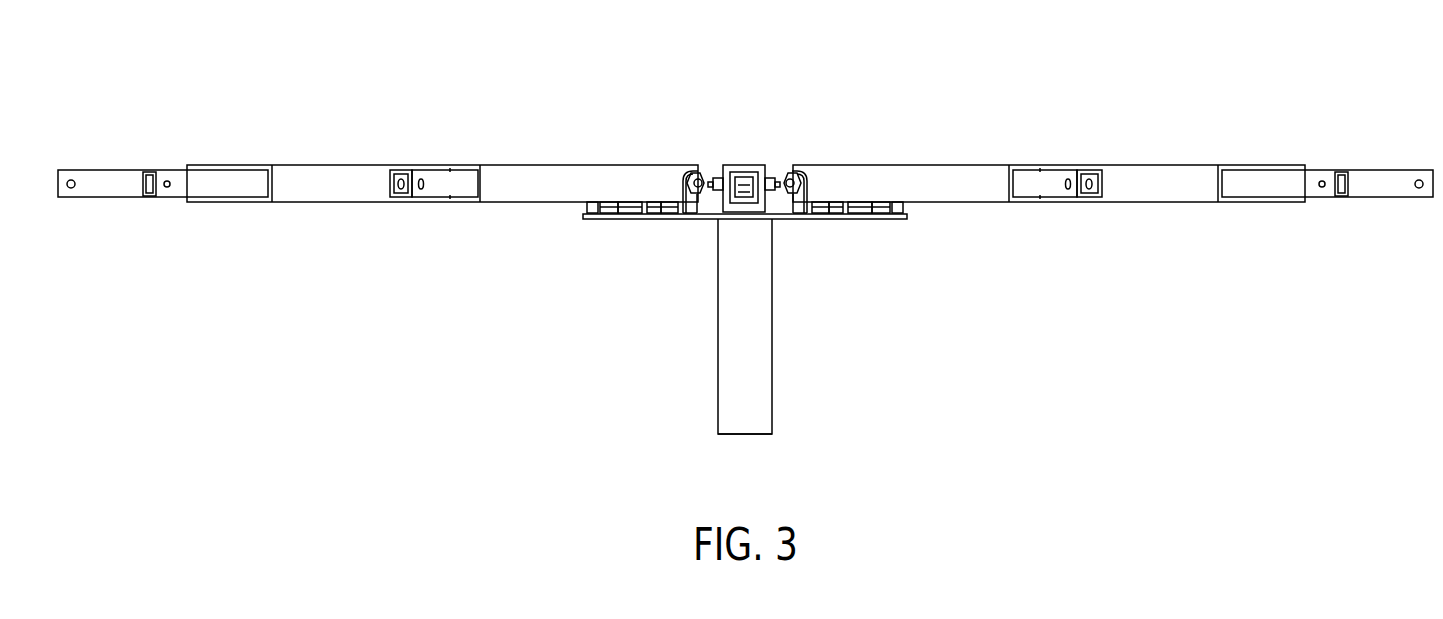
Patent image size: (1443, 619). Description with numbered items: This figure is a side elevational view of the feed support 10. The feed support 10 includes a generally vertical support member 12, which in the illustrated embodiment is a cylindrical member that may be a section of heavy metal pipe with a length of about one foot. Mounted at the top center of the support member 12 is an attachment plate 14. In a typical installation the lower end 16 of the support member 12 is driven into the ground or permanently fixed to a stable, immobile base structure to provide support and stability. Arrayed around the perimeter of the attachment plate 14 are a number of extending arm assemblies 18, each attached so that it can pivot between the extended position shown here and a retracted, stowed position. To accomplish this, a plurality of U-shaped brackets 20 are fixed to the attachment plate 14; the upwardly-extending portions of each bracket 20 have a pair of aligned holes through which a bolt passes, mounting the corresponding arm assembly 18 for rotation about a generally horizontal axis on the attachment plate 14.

The feed support 10 is at (800, 87).
The support member 12 is at (760, 370).
The attachment plate 14 is at (778, 216).
The lower end 16 is at (752, 436).
The arm assembly 18 is at (562, 164).
The U-shaped bracket 20 is at (592, 207).